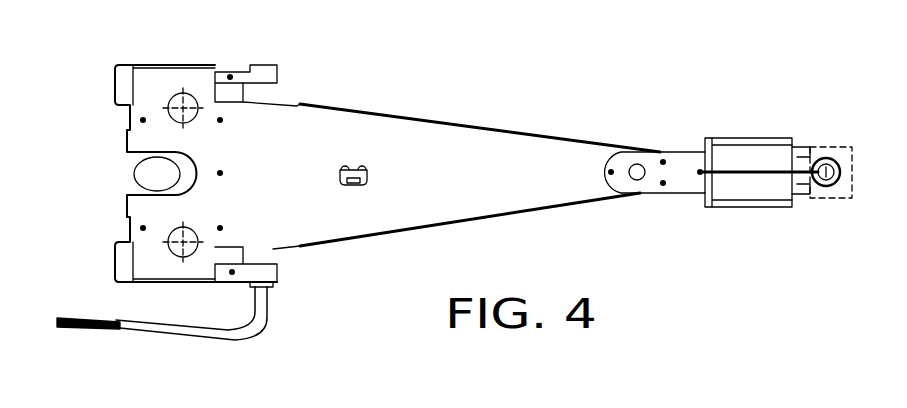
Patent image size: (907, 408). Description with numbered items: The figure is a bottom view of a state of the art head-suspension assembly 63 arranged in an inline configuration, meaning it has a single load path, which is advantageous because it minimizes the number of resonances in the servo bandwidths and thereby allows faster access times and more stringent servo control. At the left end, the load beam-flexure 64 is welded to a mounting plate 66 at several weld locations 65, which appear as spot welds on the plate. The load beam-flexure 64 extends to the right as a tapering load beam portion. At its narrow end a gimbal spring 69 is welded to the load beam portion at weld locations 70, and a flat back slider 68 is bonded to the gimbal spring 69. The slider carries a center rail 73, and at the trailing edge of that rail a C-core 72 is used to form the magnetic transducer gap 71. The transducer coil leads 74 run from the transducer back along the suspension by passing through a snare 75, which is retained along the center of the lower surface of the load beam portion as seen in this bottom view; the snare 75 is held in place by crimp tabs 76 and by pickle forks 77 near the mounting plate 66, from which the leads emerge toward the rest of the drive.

The head-suspension assembly 63 is at (475, 122).
The load beam-flexure 64 is at (370, 108).
The weld locations 65 is at (230, 77).
The mounting plate 66 is at (125, 72).
The flat back slider 68 is at (778, 140).
The gimbal spring 69 is at (680, 157).
The weld locations 70 is at (663, 162).
The magnetic transducer gap 71 is at (794, 155).
The C-core 72 is at (830, 158).
The center rail 73 is at (720, 170).
The transducer coil leads 74 is at (845, 172).
The snare 75 is at (268, 295).
The crimp tabs 76 is at (367, 175).
The pickle forks 77 is at (268, 72).